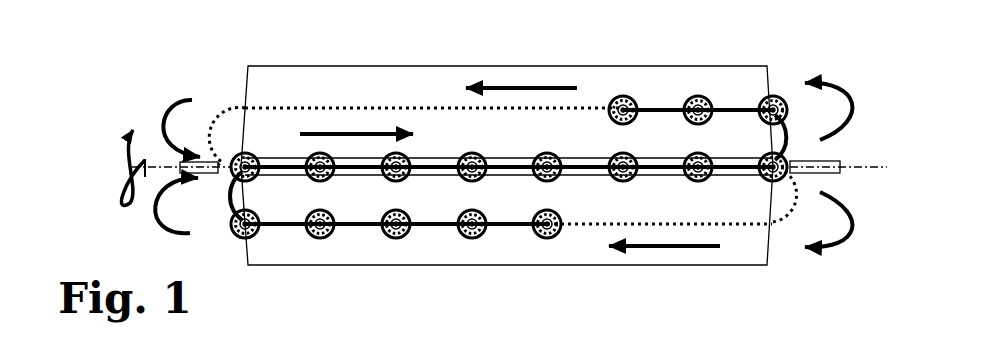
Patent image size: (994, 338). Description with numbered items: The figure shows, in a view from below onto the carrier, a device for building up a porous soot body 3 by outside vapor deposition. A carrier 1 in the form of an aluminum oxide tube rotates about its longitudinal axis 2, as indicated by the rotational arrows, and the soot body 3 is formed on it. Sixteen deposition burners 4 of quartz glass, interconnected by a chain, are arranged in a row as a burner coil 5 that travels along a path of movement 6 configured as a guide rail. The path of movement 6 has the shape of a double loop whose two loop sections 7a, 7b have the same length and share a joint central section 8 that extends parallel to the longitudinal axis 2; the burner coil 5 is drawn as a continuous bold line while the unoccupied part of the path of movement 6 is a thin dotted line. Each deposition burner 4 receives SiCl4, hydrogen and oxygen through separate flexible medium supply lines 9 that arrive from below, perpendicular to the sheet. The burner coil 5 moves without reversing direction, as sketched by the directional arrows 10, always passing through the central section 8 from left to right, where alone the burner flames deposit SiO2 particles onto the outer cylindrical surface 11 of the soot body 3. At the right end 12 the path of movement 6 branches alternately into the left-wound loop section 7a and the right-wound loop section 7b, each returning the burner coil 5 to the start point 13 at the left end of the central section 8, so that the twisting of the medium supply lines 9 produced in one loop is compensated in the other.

The carrier 1 is at (840, 170).
The longitudinal axis 2 is at (840, 163).
The porous soot body 3 is at (268, 243).
The deposition burners 4 is at (470, 178).
The burner coil 5 is at (436, 232).
The path of movement 6 is at (412, 100).
The loop section 7a is at (743, 107).
The loop section 7b is at (502, 228).
The central section 8 is at (432, 160).
The medium supply lines 9 is at (557, 157).
The directional arrows 10 is at (163, 187).
The surface 11 is at (285, 66).
The right end 12 is at (778, 183).
The start point 13 is at (235, 137).